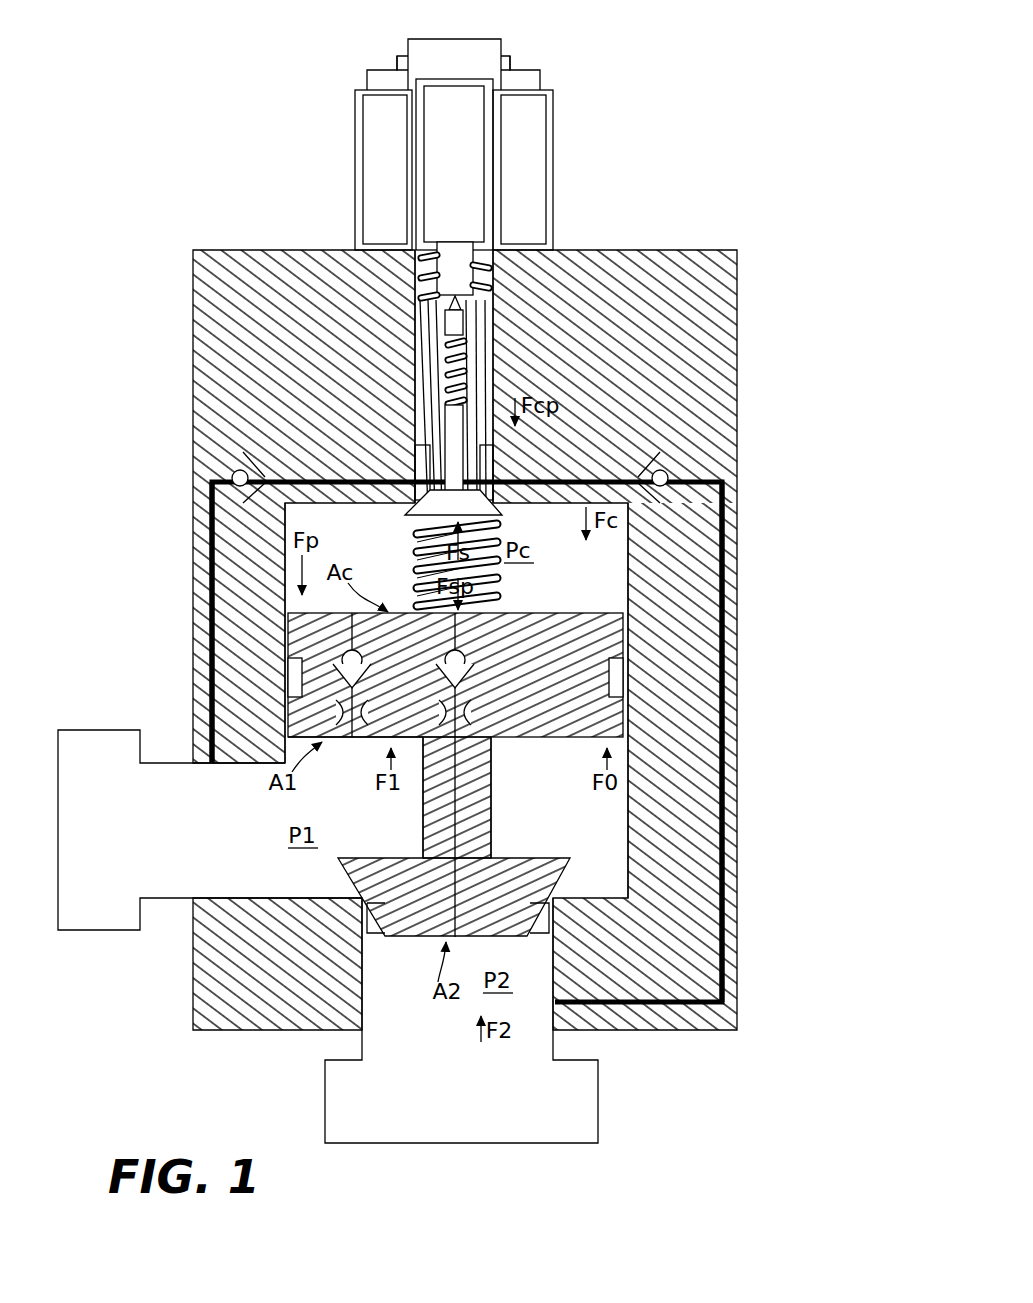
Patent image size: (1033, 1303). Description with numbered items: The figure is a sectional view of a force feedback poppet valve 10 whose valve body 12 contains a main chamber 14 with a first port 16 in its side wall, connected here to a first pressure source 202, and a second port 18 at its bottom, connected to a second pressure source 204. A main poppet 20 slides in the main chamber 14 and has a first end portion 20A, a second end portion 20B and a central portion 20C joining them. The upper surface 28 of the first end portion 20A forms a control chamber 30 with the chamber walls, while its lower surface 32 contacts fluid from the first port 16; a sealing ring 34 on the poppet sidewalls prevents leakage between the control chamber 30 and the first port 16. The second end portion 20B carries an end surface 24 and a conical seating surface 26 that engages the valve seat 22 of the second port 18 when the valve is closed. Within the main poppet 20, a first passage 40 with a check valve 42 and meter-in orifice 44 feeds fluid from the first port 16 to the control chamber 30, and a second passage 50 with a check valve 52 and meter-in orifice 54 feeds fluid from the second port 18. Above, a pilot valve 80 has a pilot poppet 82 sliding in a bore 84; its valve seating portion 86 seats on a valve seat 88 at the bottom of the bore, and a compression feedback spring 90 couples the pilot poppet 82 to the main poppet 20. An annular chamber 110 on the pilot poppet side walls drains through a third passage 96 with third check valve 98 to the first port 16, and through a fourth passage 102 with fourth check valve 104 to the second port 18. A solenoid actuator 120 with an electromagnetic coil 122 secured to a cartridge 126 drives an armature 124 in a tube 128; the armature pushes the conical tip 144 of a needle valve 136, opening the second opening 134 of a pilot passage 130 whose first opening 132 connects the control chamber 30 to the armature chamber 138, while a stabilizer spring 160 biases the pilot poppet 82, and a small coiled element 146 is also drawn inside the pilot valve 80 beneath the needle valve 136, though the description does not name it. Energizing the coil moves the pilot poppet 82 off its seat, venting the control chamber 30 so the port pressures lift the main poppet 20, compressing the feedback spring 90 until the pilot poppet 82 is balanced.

The force feedback poppet valve 10 is at (648, 66).
The valve body 12 is at (680, 395).
The main chamber 14 is at (640, 640).
The first port 16 is at (198, 820).
The second port 18 is at (530, 987).
The main poppet 20 is at (630, 720).
The first end portion 20A is at (512, 617).
The second end portion 20B is at (522, 868).
The central portion 20C is at (478, 775).
The valve seat 22 is at (352, 866).
The end surface 24 is at (398, 940).
The seating surface 26 is at (367, 935).
The upper surface 28 is at (296, 604).
The control chamber 30 is at (724, 590).
The lower surface 32 is at (372, 745).
The sealing ring 34 is at (292, 680).
The first passage 40 is at (340, 630).
The check valve 42 is at (342, 663).
The meter-in orifice 44 is at (335, 712).
The second passage 50 is at (475, 815).
The check valve 52 is at (468, 660).
The meter-in orifice 54 is at (475, 720).
The pilot valve 80 is at (405, 406).
The pilot poppet 82 is at (428, 430).
The bore 84 is at (436, 385).
The valve seating portion 86 is at (498, 508).
The valve seat 88 is at (489, 462).
The compression feedback spring 90 is at (417, 556).
The third passage 96 is at (210, 560).
The third check valve 98 is at (232, 478).
The fourth passage 102 is at (725, 490).
The fourth check valve 104 is at (670, 478).
The annular chamber 110 is at (478, 428).
The actuator 120 is at (494, 58).
The electromagnetic coil 122 is at (373, 220).
The armature 124 is at (432, 125).
The cartridge 126 is at (418, 63).
The tube 128 is at (403, 137).
The pilot passage 130 is at (486, 395).
The first opening 132 is at (444, 512).
The second opening 134 is at (494, 298).
The needle valve 136 is at (445, 320).
The armature chamber 138 is at (488, 228).
The conical tip 144 is at (494, 336).
The pilot spring 146 is at (447, 362).
The stabilizer spring 160 is at (420, 262).
The first pressure source 202 is at (95, 740).
The second pressure source 204 is at (555, 1115).